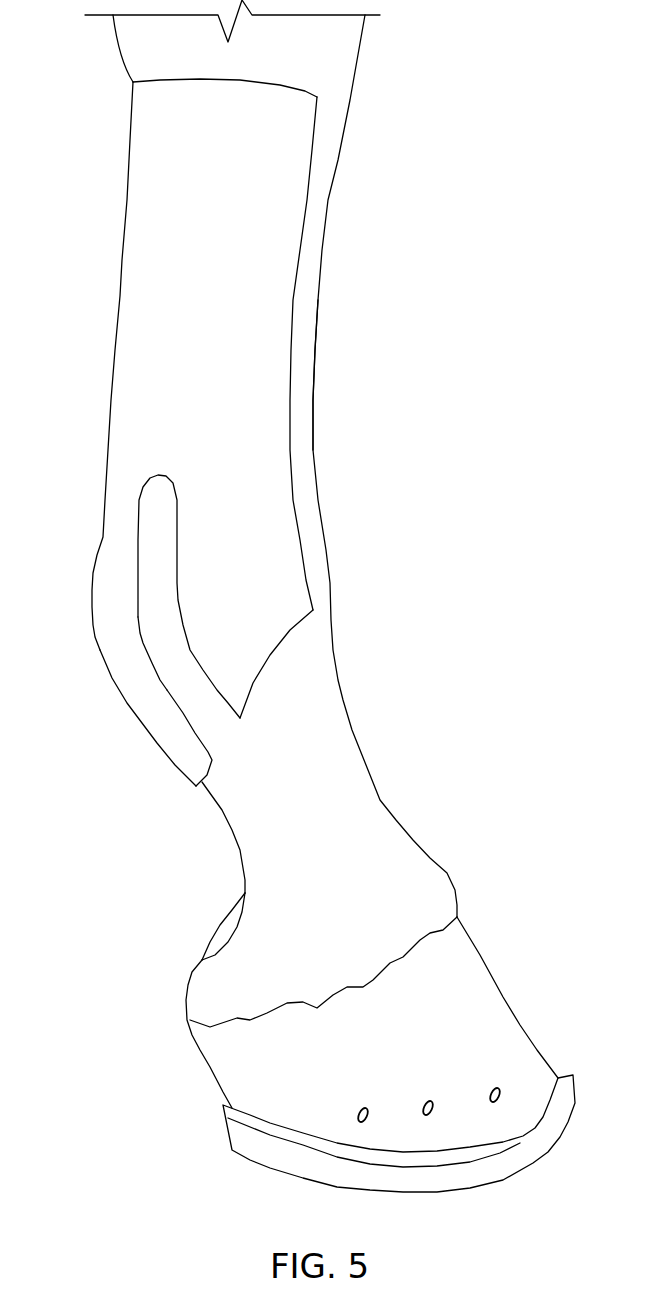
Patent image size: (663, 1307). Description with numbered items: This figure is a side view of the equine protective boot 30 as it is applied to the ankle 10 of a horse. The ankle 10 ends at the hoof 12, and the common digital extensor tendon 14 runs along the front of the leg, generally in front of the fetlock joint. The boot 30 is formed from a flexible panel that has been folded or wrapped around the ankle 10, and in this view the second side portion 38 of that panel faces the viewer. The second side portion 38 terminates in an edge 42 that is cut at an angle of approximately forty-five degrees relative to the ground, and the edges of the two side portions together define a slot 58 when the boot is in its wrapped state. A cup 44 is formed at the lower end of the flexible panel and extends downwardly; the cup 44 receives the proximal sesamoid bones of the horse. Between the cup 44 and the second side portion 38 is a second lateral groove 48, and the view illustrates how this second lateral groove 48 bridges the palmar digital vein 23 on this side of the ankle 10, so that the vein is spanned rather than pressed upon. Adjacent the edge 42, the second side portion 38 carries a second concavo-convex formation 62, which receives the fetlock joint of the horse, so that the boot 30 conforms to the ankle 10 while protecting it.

The ankle 10 is at (410, 783).
The hoof 12 is at (490, 970).
The common digital extensor tendon 14 is at (300, 403).
The palmar digital vein 23 is at (157, 622).
The equine protective boot 30 is at (281, 443).
The second side portion 38 is at (140, 293).
The edge 42 is at (293, 632).
The cup 44 is at (127, 703).
The second lateral groove 48 is at (187, 698).
The slot 58 is at (313, 232).
The second concavo-convex formation 62 is at (243, 591).